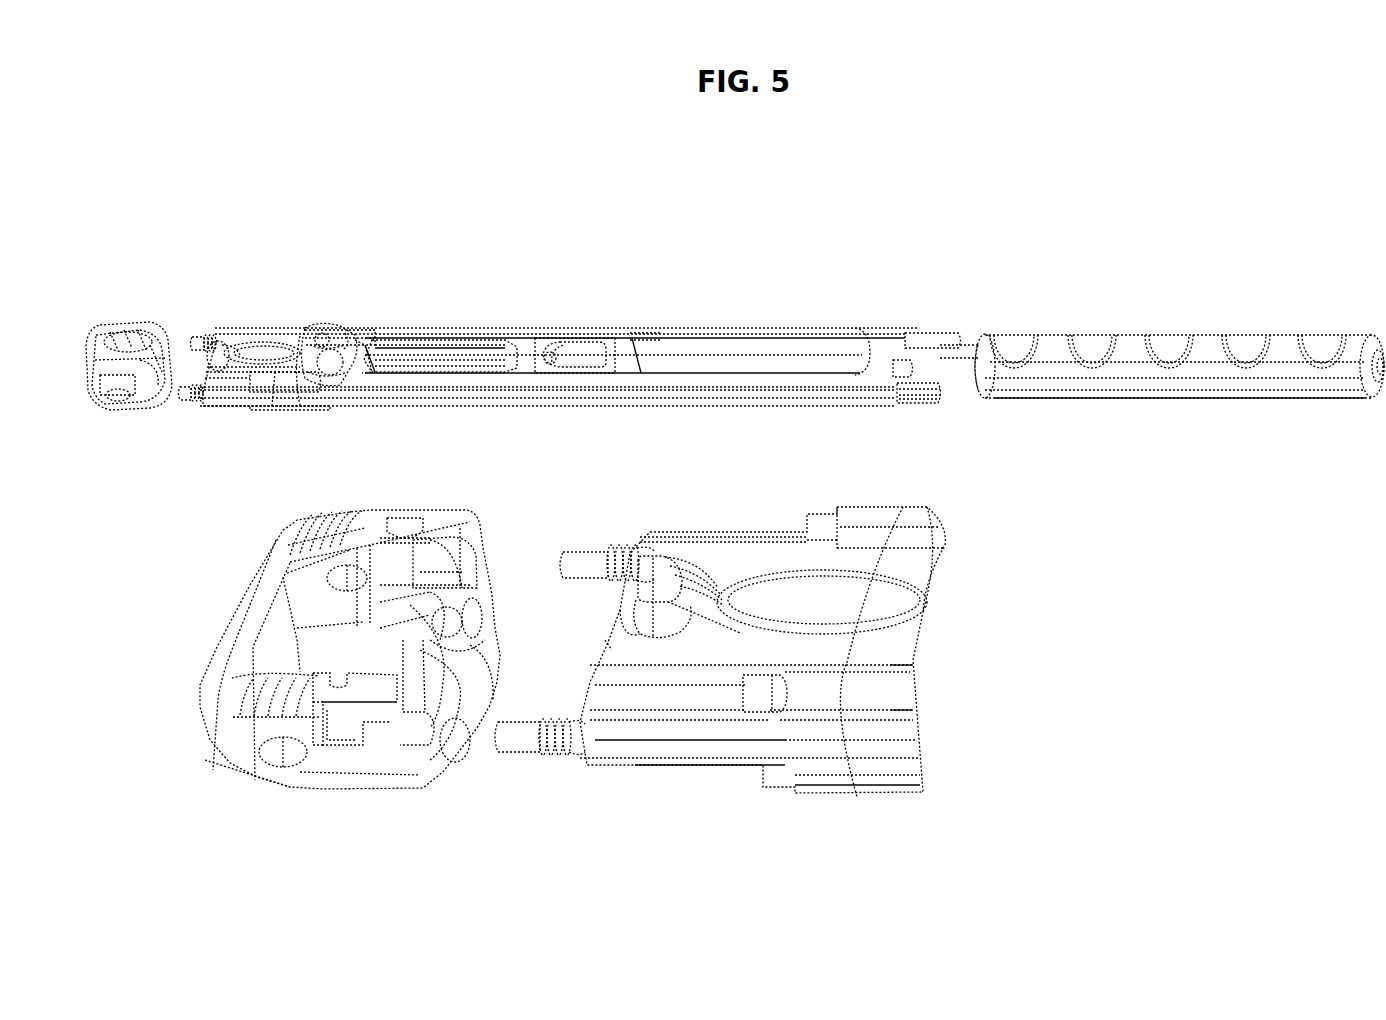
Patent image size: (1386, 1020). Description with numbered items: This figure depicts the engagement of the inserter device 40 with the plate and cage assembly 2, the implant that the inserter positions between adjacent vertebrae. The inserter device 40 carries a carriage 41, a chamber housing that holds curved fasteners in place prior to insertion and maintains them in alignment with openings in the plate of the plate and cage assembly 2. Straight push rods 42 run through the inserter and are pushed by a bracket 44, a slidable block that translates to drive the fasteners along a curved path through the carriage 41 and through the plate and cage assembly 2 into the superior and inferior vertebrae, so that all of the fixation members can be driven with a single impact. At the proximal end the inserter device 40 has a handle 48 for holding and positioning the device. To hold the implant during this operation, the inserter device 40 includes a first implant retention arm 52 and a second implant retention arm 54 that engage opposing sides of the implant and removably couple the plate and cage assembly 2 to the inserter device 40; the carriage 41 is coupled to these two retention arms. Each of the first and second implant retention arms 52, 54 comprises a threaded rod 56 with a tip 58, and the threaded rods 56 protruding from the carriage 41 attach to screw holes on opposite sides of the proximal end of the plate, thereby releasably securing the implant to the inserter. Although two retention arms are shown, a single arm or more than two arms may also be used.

The plate and cage assembly 2 is at (140, 318).
The inserter device 40 is at (748, 204).
The carriage 41 is at (282, 332).
The push rods 42 is at (469, 347).
The bracket 44 is at (610, 348).
The handle 48 is at (1180, 345).
The first implant retention arm 52 is at (609, 793).
The second implant retention arm 54 is at (610, 528).
The threaded rod 56 is at (552, 750).
The tip 58 is at (513, 742).